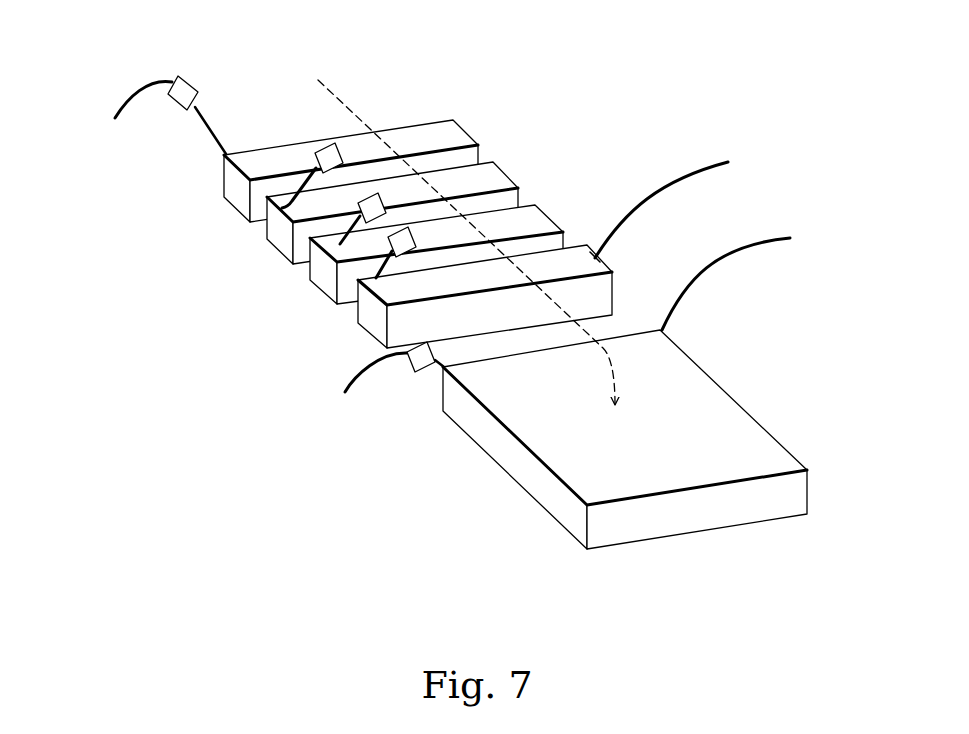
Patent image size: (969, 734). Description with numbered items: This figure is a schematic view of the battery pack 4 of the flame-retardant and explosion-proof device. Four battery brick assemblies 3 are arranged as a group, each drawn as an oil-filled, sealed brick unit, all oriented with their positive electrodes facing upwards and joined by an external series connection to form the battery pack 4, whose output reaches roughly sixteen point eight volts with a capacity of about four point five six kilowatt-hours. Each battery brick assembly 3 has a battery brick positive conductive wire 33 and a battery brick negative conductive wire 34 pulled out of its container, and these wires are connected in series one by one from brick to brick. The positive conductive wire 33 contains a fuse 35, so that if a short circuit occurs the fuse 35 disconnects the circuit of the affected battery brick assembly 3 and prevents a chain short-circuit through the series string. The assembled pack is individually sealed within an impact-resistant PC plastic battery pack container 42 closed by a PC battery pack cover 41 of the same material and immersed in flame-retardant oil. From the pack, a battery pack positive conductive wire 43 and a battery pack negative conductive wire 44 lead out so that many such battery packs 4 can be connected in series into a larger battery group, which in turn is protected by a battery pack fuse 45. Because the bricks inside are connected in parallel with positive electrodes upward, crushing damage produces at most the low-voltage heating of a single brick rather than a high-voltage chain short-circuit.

The battery brick assembly 3 is at (227, 203).
The battery brick positive conductive wire 33 is at (215, 145).
The battery brick negative conductive wire 34 is at (678, 162).
The fuse 35 is at (209, 113).
The battery pack 4 is at (580, 439).
The PC battery pack cover 41 is at (710, 402).
The impact-resistant PC plastic battery pack container 42 is at (702, 512).
The battery pack positive conductive wire 43 is at (350, 373).
The battery pack negative conductive wire 44 is at (755, 237).
The battery pack fuse 45 is at (410, 373).